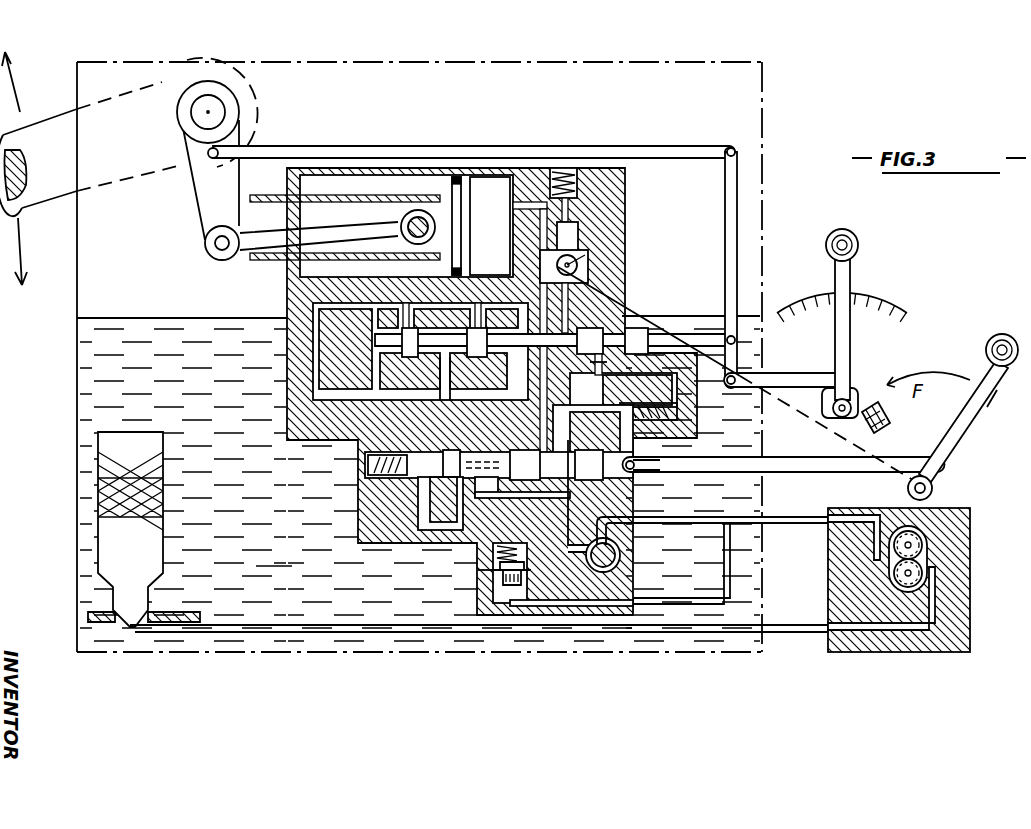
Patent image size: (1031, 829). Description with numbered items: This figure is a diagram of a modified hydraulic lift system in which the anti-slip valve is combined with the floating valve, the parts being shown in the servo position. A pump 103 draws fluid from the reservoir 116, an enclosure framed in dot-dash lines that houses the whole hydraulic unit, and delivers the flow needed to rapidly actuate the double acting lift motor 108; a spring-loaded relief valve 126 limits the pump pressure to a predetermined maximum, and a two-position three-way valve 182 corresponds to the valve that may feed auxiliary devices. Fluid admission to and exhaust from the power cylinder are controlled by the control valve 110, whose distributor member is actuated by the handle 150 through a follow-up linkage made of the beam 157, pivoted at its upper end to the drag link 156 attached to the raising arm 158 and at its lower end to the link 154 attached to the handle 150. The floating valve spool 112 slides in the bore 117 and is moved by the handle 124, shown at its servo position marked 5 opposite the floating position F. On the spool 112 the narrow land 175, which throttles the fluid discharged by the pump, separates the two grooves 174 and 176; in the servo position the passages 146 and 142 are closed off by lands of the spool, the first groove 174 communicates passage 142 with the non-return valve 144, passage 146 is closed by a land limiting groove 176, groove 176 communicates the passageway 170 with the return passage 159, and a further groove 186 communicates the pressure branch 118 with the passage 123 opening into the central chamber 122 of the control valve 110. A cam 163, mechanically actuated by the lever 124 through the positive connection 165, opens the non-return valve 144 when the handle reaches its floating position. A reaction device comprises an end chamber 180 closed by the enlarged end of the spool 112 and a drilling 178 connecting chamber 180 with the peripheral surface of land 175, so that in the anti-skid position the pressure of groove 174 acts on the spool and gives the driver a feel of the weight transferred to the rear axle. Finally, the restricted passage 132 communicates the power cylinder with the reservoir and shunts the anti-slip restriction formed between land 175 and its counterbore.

The lever portion 5 is at (998, 395).
The pump 103 is at (913, 572).
The motor 108 is at (380, 158).
The control valve 110 is at (408, 327).
The floating valve spool 112 is at (571, 455).
The reservoir 116 is at (191, 529).
The bore 117 is at (362, 494).
The pressure branch 118 is at (420, 508).
The central chamber 122 is at (448, 327).
The passage 123 is at (447, 408).
The handle 124 is at (958, 433).
The relief valve 126 is at (493, 577).
The restricted passage 132 is at (604, 392).
The passage 142 is at (493, 305).
The non-return valve 144 is at (567, 237).
The passage 146 is at (300, 304).
The handle 150 is at (848, 278).
The link 154 is at (792, 383).
The drag link 156 is at (565, 150).
The beam 157 is at (740, 190).
The raising arm 158 is at (215, 205).
The return passage 159 is at (490, 570).
The cam 163 is at (578, 265).
The positive connection 165 is at (784, 449).
The passageway 170 is at (632, 485).
The groove 174 is at (528, 498).
The narrow land 175 is at (490, 498).
The groove 176 is at (485, 455).
The drilling 178 is at (446, 499).
The end chamber 180 is at (390, 478).
The two-position three-way valve 182 is at (606, 568).
The groove 186 is at (440, 455).